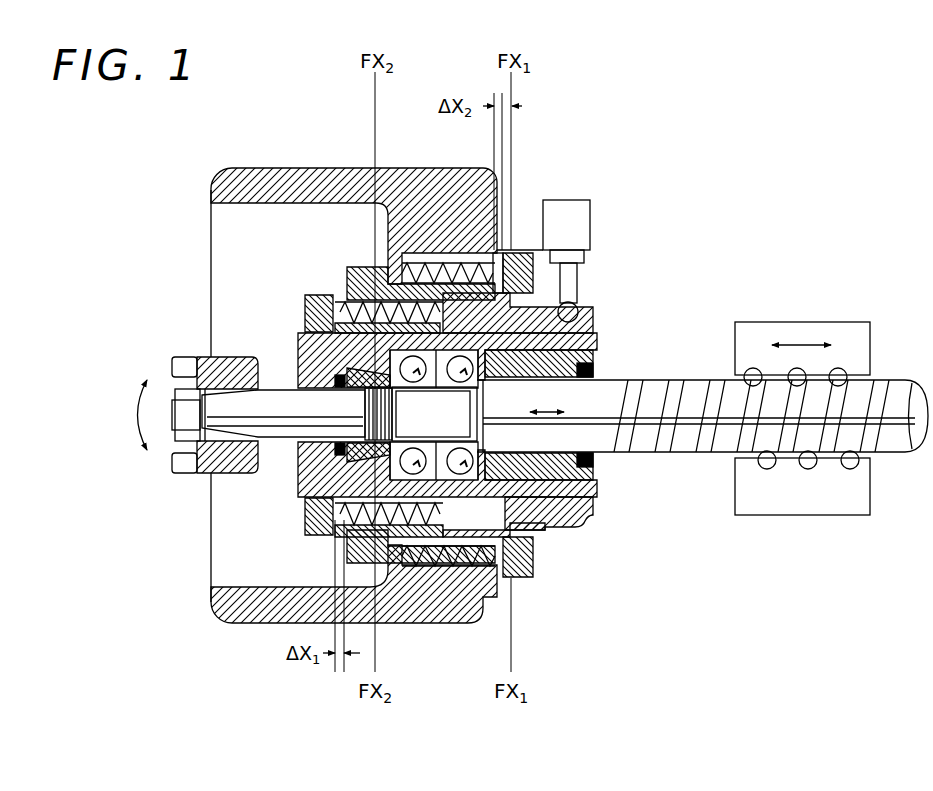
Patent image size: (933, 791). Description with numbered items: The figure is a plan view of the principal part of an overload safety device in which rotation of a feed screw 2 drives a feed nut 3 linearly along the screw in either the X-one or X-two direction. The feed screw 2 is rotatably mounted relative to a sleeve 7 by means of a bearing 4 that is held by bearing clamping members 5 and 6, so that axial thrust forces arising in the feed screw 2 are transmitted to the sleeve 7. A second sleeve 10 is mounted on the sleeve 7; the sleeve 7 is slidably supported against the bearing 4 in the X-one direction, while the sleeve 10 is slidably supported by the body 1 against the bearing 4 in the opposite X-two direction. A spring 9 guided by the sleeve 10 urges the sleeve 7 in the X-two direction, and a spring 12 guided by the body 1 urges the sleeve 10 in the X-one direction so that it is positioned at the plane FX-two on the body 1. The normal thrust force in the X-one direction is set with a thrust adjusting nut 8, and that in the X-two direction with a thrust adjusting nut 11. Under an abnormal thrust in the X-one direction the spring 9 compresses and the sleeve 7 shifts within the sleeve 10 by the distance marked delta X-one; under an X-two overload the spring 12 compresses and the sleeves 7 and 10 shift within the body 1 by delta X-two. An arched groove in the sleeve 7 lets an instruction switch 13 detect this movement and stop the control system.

The body 1 is at (268, 218).
The feed screw 2 is at (662, 450).
The feed nut 3 is at (803, 507).
The bearing 4 is at (533, 517).
The bearing clamping member 5 is at (588, 348).
The bearing clamping member 6 is at (372, 382).
The sleeve 7 is at (325, 348).
The thrust adjusting nut 8 is at (317, 515).
The spring 9 is at (362, 527).
The sleeve 10 is at (358, 277).
The thrust adjusting nut 11 is at (527, 250).
The spring 12 is at (445, 256).
The instruction switch 13 is at (575, 212).